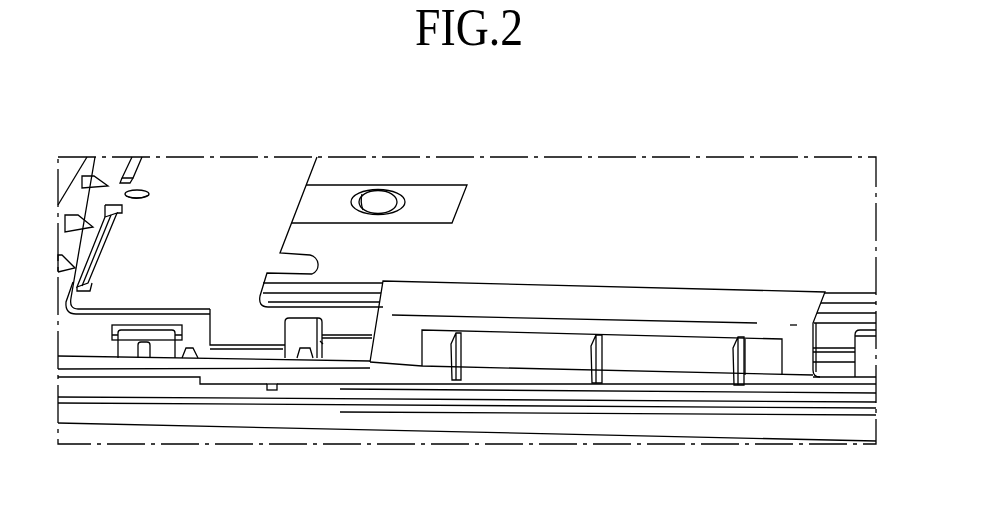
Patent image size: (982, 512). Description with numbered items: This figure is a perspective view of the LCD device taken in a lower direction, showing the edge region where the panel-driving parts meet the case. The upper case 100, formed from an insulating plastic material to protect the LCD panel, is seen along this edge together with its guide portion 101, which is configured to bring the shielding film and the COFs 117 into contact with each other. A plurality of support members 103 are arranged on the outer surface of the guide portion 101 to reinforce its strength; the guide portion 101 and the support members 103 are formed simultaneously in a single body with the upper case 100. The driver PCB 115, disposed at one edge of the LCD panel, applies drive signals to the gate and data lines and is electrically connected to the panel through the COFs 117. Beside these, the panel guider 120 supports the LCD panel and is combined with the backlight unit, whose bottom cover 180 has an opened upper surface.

The upper case 100 is at (503, 424).
The guide portion 101 is at (681, 360).
The support members 103 is at (607, 378).
The driver PCB 115 is at (599, 197).
The COF 117 is at (797, 363).
The panel guider 120 is at (292, 347).
The bottom cover 180 is at (206, 185).